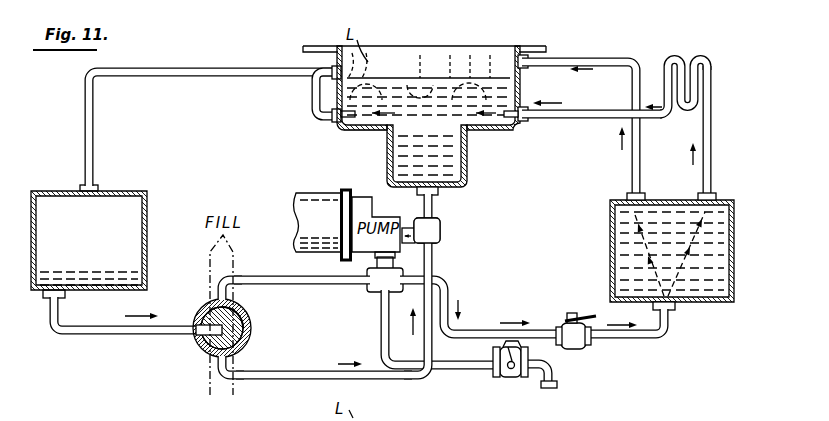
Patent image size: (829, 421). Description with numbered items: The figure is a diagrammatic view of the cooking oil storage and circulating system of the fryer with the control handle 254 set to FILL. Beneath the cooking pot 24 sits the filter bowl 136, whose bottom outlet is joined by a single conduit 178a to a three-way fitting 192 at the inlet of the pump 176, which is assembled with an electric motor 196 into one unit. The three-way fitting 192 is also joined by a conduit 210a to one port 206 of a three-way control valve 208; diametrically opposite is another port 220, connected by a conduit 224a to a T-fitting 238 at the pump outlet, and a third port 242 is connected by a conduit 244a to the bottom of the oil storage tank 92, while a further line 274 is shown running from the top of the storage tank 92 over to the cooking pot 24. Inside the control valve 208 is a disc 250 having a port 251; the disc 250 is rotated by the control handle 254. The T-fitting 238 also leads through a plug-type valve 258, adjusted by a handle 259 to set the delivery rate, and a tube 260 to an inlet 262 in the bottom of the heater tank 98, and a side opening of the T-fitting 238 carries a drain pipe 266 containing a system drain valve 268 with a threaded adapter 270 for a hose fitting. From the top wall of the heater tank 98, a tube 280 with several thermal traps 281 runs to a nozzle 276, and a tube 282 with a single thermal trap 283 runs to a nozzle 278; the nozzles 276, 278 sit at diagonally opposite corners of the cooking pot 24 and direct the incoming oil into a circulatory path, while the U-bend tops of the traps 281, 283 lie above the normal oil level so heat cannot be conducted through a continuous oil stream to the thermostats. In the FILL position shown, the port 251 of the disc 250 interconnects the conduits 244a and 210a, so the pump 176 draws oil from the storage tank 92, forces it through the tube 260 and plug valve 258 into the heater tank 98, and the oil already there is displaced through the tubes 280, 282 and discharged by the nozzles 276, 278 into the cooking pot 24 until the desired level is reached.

The cooking pot 24 is at (530, 77).
The oil storage tank 92 is at (132, 190).
The heater tank 98 is at (735, 248).
The filter bowl 136 is at (470, 165).
The pump 176 is at (346, 190).
The conduit 178a is at (438, 204).
The three-way fitting 192 is at (440, 225).
The electric motor 196 is at (302, 194).
The port 206 is at (216, 361).
The three-way control valve 208 is at (225, 326).
The conduit 210a is at (330, 371).
The port 220 is at (218, 296).
The conduit 224a is at (277, 258).
The T-fitting 238 is at (376, 290).
The third port 242 is at (187, 332).
The conduit 244a is at (74, 333).
The disc 250 is at (240, 303).
The port 251 is at (247, 340).
The control handle 254 is at (205, 386).
The plug-type valve 258 is at (583, 347).
The handle 259 is at (578, 313).
The tube 260 is at (646, 342).
The inlet 262 is at (676, 309).
The drain pipe 266 is at (441, 372).
The system drain valve 268 is at (511, 377).
The adapter 270 is at (554, 372).
The conduit 274 is at (231, 78).
The nozzle 276 is at (368, 94).
The nozzle 278 is at (449, 93).
The tube 280 is at (633, 167).
The trap 281 is at (388, 140).
The tube 282 is at (712, 147).
The trap 283 is at (687, 108).